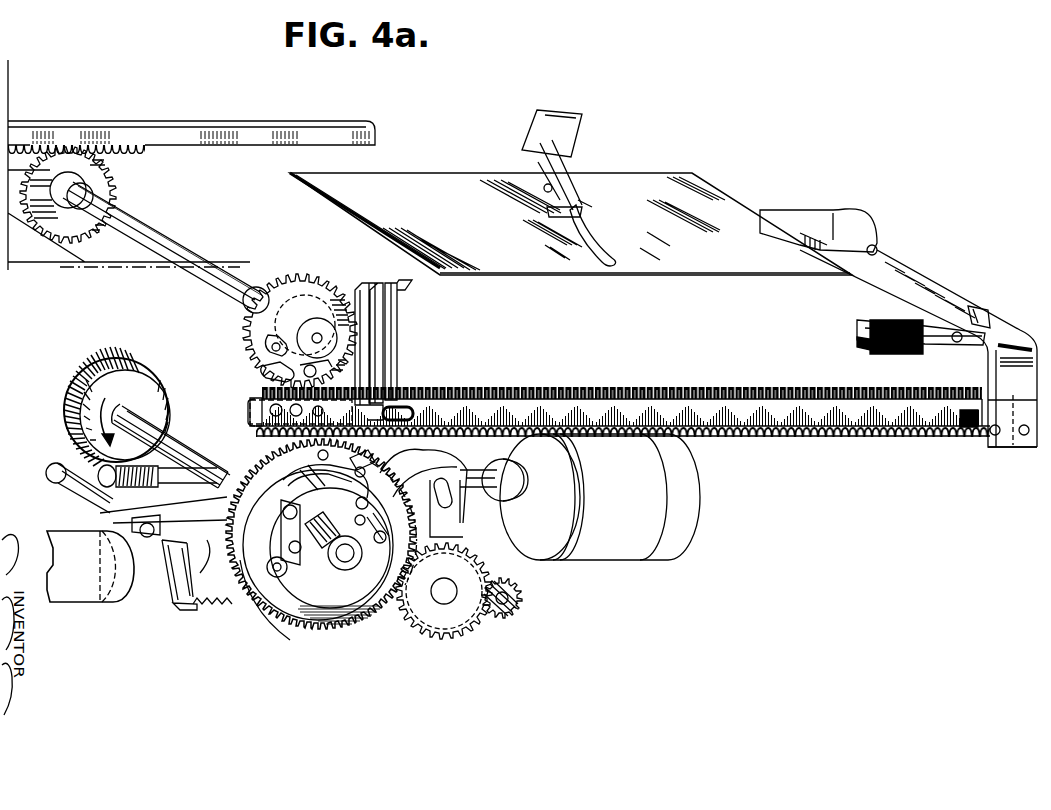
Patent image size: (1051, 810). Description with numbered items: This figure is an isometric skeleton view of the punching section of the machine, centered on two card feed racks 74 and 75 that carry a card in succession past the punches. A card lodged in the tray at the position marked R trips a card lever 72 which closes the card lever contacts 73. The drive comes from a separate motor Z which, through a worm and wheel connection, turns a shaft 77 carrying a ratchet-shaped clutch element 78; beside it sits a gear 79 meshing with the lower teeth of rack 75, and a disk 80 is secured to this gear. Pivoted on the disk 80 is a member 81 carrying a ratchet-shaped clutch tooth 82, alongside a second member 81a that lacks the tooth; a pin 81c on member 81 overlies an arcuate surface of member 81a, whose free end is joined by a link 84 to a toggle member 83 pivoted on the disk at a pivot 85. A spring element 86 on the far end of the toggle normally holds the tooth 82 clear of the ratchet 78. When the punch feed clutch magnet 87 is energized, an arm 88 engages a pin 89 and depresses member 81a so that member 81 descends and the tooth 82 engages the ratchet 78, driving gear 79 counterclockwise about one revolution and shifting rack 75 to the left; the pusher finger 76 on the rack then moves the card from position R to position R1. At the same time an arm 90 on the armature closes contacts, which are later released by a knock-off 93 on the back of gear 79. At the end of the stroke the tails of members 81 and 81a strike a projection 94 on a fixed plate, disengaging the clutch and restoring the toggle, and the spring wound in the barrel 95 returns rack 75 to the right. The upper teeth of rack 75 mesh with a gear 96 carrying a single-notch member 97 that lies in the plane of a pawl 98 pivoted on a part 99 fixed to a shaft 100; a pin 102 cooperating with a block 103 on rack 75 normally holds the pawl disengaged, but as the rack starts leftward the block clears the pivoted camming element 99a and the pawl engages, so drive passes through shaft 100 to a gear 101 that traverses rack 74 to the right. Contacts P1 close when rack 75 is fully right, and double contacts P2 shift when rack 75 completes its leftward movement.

The card lever 72 is at (600, 236).
The card lever contacts 73 is at (573, 184).
The card feed rack 74 is at (110, 130).
The card feed rack 75 is at (793, 428).
The pusher finger 76 is at (810, 213).
The shaft 77 is at (150, 430).
The ratchet-shaped clutch element 78 is at (313, 530).
The gear 79 is at (313, 622).
The disk 80 is at (350, 587).
The member 81 is at (323, 470).
The member 81a is at (380, 470).
The pin 81c is at (303, 470).
The clutch tooth 82 is at (286, 556).
The toggle member 83 is at (310, 570).
The link 84 is at (283, 528).
The pivot 85 is at (300, 480).
The spring element 86 is at (350, 587).
The punch feed clutch magnet 87 is at (90, 566).
The arm 88 is at (168, 548).
The pin 89 is at (427, 497).
The arm 90 is at (118, 510).
The knock-off 93 is at (200, 573).
The projection 94 is at (413, 473).
The spring barrel 95 is at (447, 617).
The gear 96 is at (318, 292).
The member 97 is at (362, 283).
The pawl 98 is at (397, 348).
The part 99 is at (268, 347).
The pivoted camming element 99a is at (264, 373).
The shaft 100 is at (248, 292).
The gear 101 is at (108, 173).
The pin 102 is at (325, 410).
The block 103 is at (247, 405).
The card position R is at (670, 258).
The card position R1 is at (180, 220).
The contacts P1 is at (958, 330).
The double contacts P2 is at (378, 386).
The motor Z is at (600, 497).